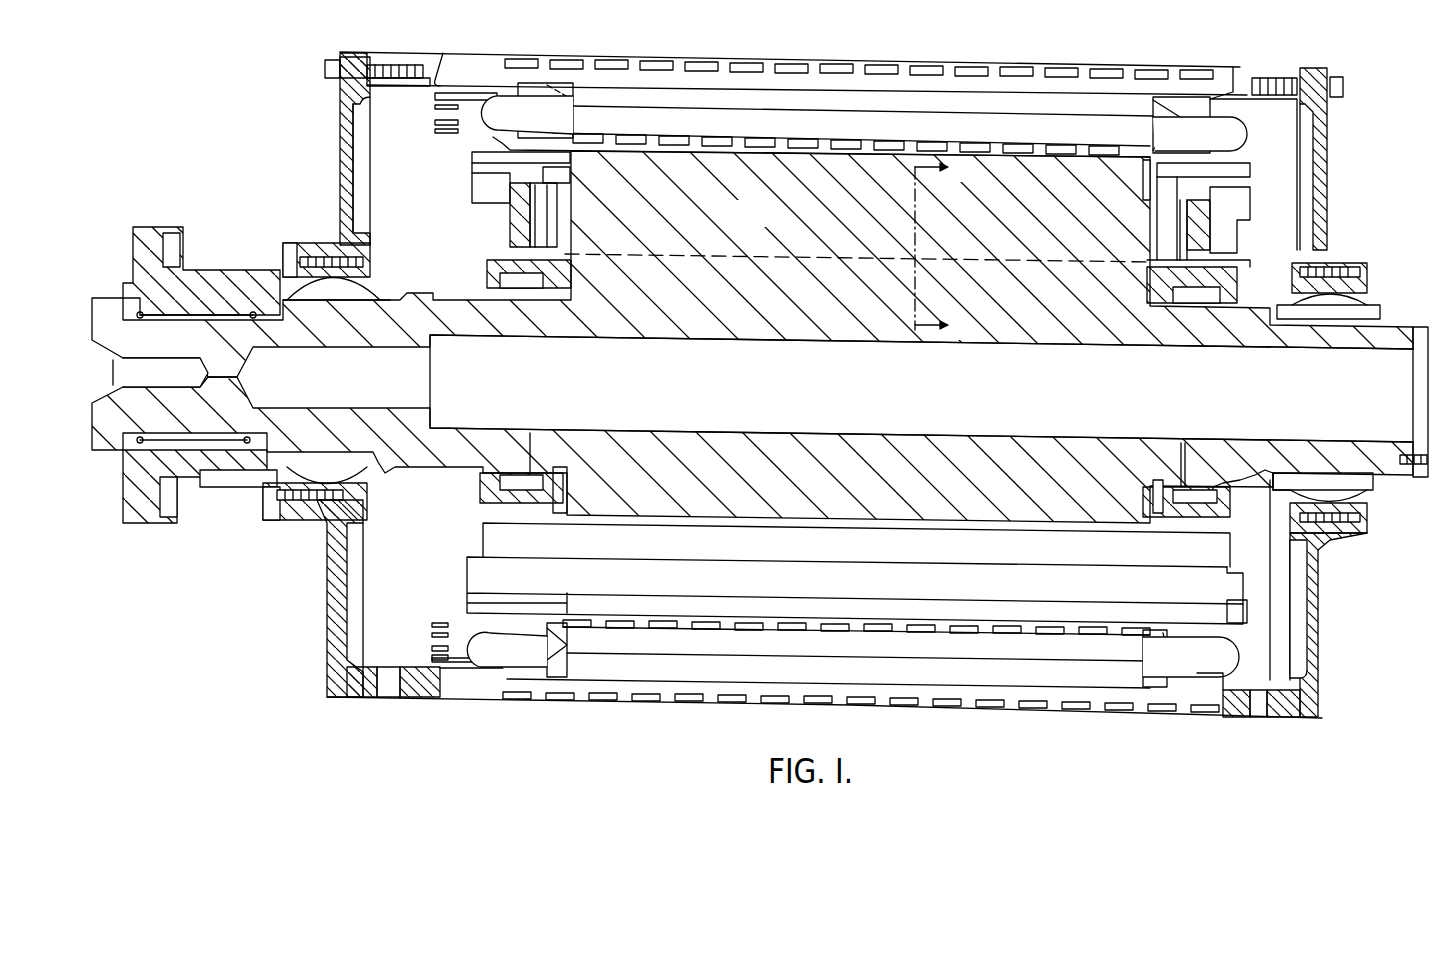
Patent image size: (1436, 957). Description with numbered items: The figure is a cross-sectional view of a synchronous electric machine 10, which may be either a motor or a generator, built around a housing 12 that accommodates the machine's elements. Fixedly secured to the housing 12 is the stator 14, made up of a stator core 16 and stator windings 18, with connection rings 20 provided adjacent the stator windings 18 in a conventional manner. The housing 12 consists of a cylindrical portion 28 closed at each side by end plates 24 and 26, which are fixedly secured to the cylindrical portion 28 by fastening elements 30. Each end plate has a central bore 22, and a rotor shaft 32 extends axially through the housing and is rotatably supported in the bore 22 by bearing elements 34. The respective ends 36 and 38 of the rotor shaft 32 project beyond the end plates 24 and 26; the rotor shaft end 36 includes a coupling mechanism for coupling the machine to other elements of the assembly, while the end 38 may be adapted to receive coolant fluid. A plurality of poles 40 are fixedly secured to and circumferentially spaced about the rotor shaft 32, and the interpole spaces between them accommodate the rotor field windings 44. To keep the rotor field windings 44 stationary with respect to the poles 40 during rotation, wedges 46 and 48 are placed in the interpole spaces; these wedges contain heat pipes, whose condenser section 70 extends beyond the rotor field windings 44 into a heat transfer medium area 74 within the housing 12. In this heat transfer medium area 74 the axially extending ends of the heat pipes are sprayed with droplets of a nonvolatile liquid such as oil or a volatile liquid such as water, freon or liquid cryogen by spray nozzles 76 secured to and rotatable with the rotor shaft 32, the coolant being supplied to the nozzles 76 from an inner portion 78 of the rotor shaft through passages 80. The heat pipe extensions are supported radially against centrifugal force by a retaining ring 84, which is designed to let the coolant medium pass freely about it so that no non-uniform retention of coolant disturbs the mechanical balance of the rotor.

The synchronous electric machine 10 is at (730, 368).
The housing 12 is at (338, 160).
The stator 14 is at (1222, 95).
The stator core 16 is at (1128, 115).
The stator windings 18 is at (1248, 132).
The connection rings 20 is at (440, 53).
The central bore 22 is at (400, 297).
The end plate 24 is at (327, 600).
The end plate 26 is at (1327, 608).
The cylindrical portion 28 is at (505, 55).
The fastening elements 30 is at (327, 68).
The rotor shaft 32 is at (85, 430).
The bearing elements 34 is at (383, 470).
The rotor shaft end 36 is at (88, 322).
The rotor shaft end 38 is at (1408, 322).
The poles 40 is at (763, 222).
The rotor field windings 44 is at (515, 220).
The wedge 46 is at (472, 167).
The wedge 48 is at (487, 232).
The condenser section 70 is at (472, 190).
The heat transfer medium area 74 is at (422, 236).
The spray nozzles 76 is at (520, 290).
The inner portion of the rotor shaft 78 is at (925, 402).
The passages 80 is at (533, 440).
The retaining ring 84 is at (503, 137).